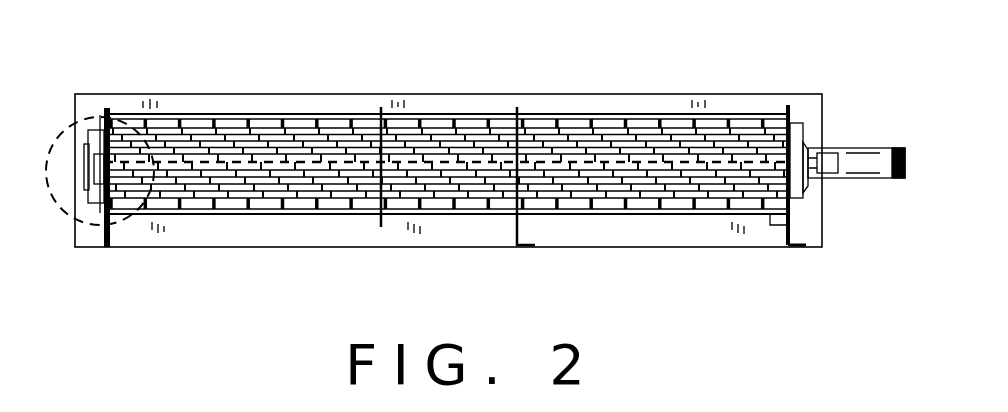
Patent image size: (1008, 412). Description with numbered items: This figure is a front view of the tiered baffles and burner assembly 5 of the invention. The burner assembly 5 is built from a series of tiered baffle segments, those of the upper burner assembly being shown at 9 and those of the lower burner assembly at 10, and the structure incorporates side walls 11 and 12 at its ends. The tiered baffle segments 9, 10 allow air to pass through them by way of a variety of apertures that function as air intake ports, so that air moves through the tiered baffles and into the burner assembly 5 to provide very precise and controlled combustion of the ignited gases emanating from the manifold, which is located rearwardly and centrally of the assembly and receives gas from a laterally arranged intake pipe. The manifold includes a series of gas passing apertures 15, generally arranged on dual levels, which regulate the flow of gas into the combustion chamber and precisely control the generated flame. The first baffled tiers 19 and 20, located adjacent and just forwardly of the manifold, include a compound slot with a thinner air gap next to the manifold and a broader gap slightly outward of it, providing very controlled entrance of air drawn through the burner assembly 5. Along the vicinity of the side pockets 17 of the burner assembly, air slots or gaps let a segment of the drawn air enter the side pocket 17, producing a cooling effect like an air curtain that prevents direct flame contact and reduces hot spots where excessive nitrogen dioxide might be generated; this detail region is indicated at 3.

The detail region shown in FIG. 3 is at (60, 143).
The burner assembly 5 is at (258, 90).
The upper burner assembly tiered baffle segments 9 is at (634, 117).
The lower burner assembly tiered baffle segments 10 is at (682, 214).
The side wall 11 is at (104, 228).
The side wall 12 is at (790, 225).
The gas passing apertures 15 is at (450, 124).
The side pocket 17 is at (865, 148).
The first baffled tier 19 is at (497, 158).
The first baffled tier 20 is at (470, 172).